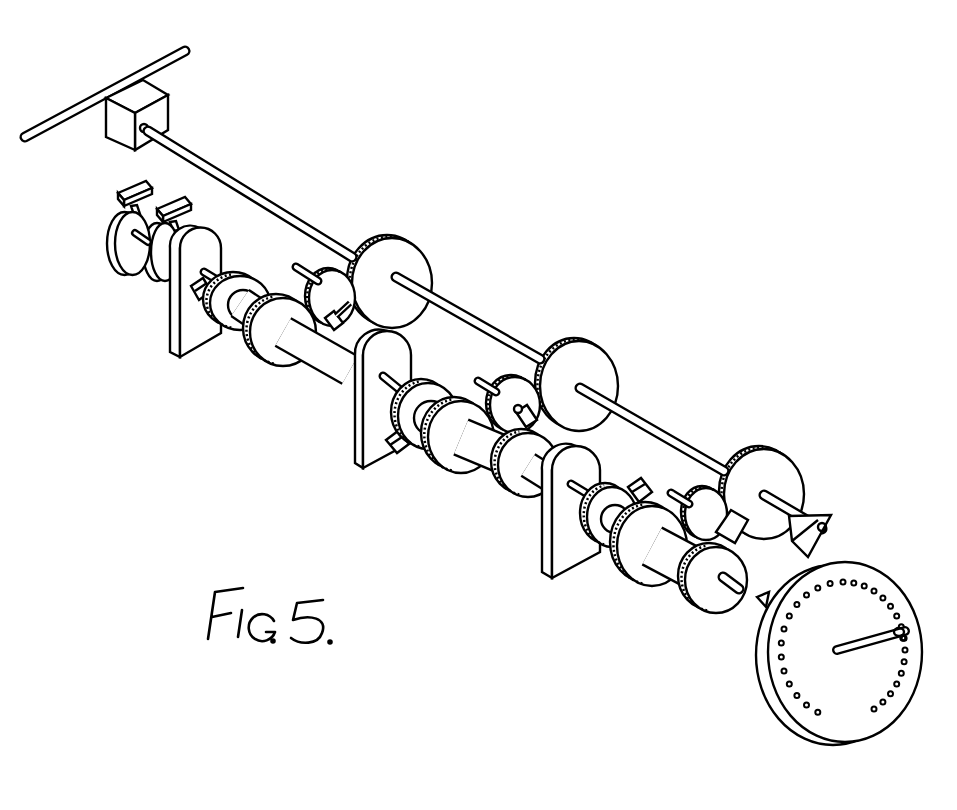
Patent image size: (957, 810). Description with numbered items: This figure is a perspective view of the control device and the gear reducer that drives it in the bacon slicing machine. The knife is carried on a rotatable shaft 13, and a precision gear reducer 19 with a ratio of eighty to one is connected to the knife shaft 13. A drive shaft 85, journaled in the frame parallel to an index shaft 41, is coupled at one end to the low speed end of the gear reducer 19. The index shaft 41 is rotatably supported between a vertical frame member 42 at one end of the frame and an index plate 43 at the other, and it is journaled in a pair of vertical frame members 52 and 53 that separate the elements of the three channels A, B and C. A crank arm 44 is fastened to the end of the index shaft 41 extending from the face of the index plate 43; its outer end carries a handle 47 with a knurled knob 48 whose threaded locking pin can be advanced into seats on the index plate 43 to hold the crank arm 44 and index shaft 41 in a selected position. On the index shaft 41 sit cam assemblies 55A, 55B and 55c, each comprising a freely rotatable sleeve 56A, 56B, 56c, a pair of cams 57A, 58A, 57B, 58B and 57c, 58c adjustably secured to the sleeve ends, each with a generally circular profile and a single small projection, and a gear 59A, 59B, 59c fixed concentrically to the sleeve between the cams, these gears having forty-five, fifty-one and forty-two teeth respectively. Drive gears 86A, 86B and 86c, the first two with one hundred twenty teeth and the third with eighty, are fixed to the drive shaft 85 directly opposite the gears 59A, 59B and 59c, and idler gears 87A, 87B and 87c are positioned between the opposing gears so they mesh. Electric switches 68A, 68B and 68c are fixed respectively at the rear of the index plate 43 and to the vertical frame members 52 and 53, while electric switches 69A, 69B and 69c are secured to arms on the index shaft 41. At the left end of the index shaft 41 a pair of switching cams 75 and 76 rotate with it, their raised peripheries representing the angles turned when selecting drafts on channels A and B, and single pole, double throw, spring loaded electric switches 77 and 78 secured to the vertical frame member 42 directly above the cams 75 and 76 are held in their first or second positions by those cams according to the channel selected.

The rotatable shaft 13 is at (68, 110).
The precision gear reducer 19 is at (160, 102).
The drive shaft 85 is at (233, 173).
The electric switch 78 is at (130, 187).
The electric switch 77 is at (185, 180).
The switching cam 76 is at (112, 270).
The switching cam 75 is at (160, 284).
The vertical frame member 42 is at (170, 343).
The vertical frame member 53 is at (355, 465).
The vertical frame member 52 is at (544, 573).
The electric switch 69c is at (196, 278).
The electric switch 69B is at (402, 452).
The electric switch 69A is at (648, 473).
The cam 58c is at (270, 280).
The cam 58B is at (462, 386).
The cam 58A is at (613, 555).
The sleeve 56c is at (243, 340).
The sleeve 56B is at (495, 487).
The sleeve 56A is at (640, 585).
The gear 59c is at (280, 368).
The gear 59B is at (478, 472).
The gear 59A is at (668, 588).
The cam 57c is at (333, 390).
The cam 57B is at (530, 497).
The cam 57A is at (705, 615).
The cam assembly 55c is at (340, 403).
The cam assembly 55B is at (532, 513).
The cam assembly 55A is at (738, 610).
The idler gear 87c is at (327, 270).
The idler gear 87B is at (502, 380).
The idler gear 87A is at (716, 492).
The electric switch 68c is at (359, 301).
The electric switch 68B is at (538, 403).
The electric switch 68A is at (742, 512).
The drive gear 86c is at (387, 240).
The drive gear 86B is at (588, 348).
The drive gear 86A is at (762, 450).
The index shaft 41 is at (742, 550).
The index plate 43 is at (870, 566).
The crank arm 44 is at (868, 655).
The handle 47 is at (900, 627).
The knurled knob 48 is at (904, 634).